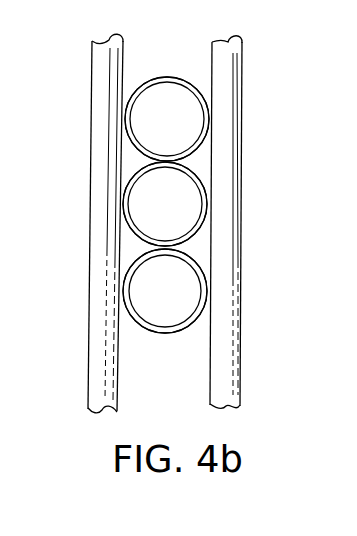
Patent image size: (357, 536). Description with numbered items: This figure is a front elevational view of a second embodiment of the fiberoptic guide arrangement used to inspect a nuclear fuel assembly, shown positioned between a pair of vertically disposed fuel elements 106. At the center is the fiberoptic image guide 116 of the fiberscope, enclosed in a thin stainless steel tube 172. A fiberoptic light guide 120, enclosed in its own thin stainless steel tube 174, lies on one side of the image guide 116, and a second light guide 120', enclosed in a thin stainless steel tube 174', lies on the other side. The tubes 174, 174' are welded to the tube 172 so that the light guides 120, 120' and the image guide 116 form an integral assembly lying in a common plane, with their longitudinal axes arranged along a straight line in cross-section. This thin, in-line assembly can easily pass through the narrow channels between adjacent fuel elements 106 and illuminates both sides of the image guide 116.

The fuel elements 106 is at (108, 100).
The fiberoptic light guide 120 is at (204, 119).
The second light guide 120' is at (165, 312).
The fiberoptic image guide 116 is at (195, 195).
The thin stainless steel tube 172 is at (133, 182).
The thin stainless steel tube 174 is at (167, 99).
The thin stainless steel tube 174' is at (203, 291).